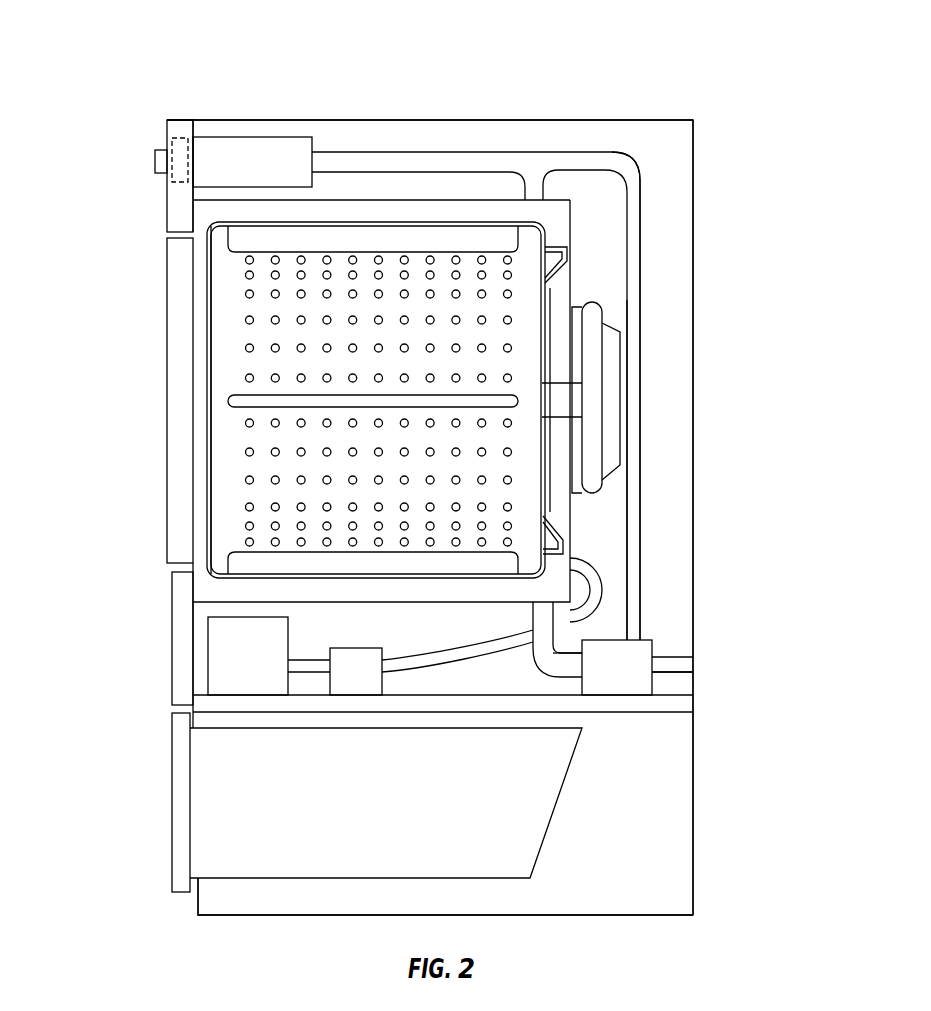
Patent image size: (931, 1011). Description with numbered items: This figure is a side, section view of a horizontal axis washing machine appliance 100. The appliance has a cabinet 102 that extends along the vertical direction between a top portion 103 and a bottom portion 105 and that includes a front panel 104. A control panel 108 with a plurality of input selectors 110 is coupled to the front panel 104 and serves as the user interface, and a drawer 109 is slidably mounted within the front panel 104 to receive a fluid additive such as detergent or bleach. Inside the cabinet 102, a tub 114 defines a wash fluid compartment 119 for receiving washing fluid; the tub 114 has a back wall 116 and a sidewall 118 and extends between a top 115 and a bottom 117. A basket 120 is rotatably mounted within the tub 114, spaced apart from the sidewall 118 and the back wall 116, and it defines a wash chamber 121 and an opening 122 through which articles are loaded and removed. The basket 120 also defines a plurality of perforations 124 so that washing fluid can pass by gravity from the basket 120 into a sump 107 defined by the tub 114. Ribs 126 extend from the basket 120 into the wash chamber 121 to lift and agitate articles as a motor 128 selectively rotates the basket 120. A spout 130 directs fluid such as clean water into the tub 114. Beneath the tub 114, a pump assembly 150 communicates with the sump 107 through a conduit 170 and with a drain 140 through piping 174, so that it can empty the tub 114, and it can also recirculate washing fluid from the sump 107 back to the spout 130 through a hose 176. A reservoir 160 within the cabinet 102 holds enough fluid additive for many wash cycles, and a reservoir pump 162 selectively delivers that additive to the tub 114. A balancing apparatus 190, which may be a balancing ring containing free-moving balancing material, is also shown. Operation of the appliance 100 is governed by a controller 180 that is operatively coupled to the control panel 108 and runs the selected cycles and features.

The washing machine appliance 100 is at (234, 79).
The cabinet 102 is at (693, 440).
The top portion 103 is at (701, 128).
The front panel 104 is at (166, 625).
The bottom portion 105 is at (703, 906).
The sump 107 is at (396, 592).
The control panel 108 is at (164, 135).
The drawer 109 is at (276, 155).
The input selectors 110 is at (153, 158).
The tub 114 is at (570, 283).
The top 115 is at (576, 189).
The back wall 116 is at (573, 547).
The bottom 117 is at (578, 585).
The sidewall 118 is at (460, 603).
The wash fluid compartment 119 is at (226, 208).
The basket 120 is at (540, 472).
The wash chamber 121 is at (226, 276).
The opening 122 is at (206, 393).
The perforations 124 is at (274, 347).
The ribs 126 is at (247, 563).
The motor 128 is at (588, 372).
The spout 130 is at (532, 189).
The drain 140 is at (696, 663).
The pump assembly 150 is at (645, 652).
The reservoir 160 is at (228, 673).
The reservoir pump 162 is at (353, 670).
The conduit 170 is at (558, 663).
The piping 174 is at (673, 662).
The hose 176 is at (636, 295).
The controller 180 is at (167, 143).
The balancing apparatus 190 is at (553, 246).